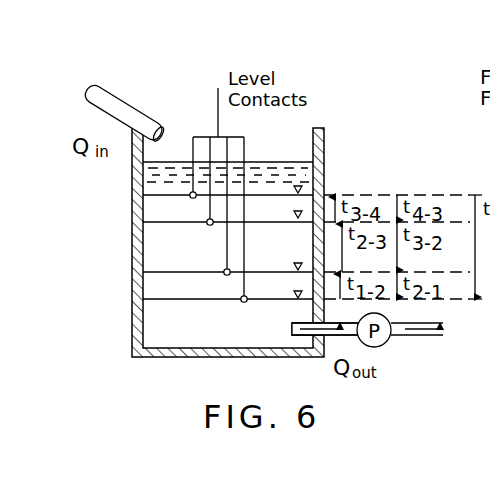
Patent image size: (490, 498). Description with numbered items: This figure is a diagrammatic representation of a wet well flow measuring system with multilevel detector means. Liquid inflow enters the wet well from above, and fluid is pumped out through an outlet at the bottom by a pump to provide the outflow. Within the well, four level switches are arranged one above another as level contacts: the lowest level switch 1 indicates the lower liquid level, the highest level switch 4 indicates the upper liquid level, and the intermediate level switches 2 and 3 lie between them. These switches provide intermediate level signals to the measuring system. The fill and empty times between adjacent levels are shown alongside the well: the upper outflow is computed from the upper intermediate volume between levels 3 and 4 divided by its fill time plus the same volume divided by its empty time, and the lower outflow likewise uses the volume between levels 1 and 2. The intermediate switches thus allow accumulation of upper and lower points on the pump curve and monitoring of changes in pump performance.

The level switch l1 1 is at (228, 221).
The level switch l2 2 is at (228, 206).
The level switch l3 3 is at (228, 181).
The level switch l4 4 is at (228, 169).